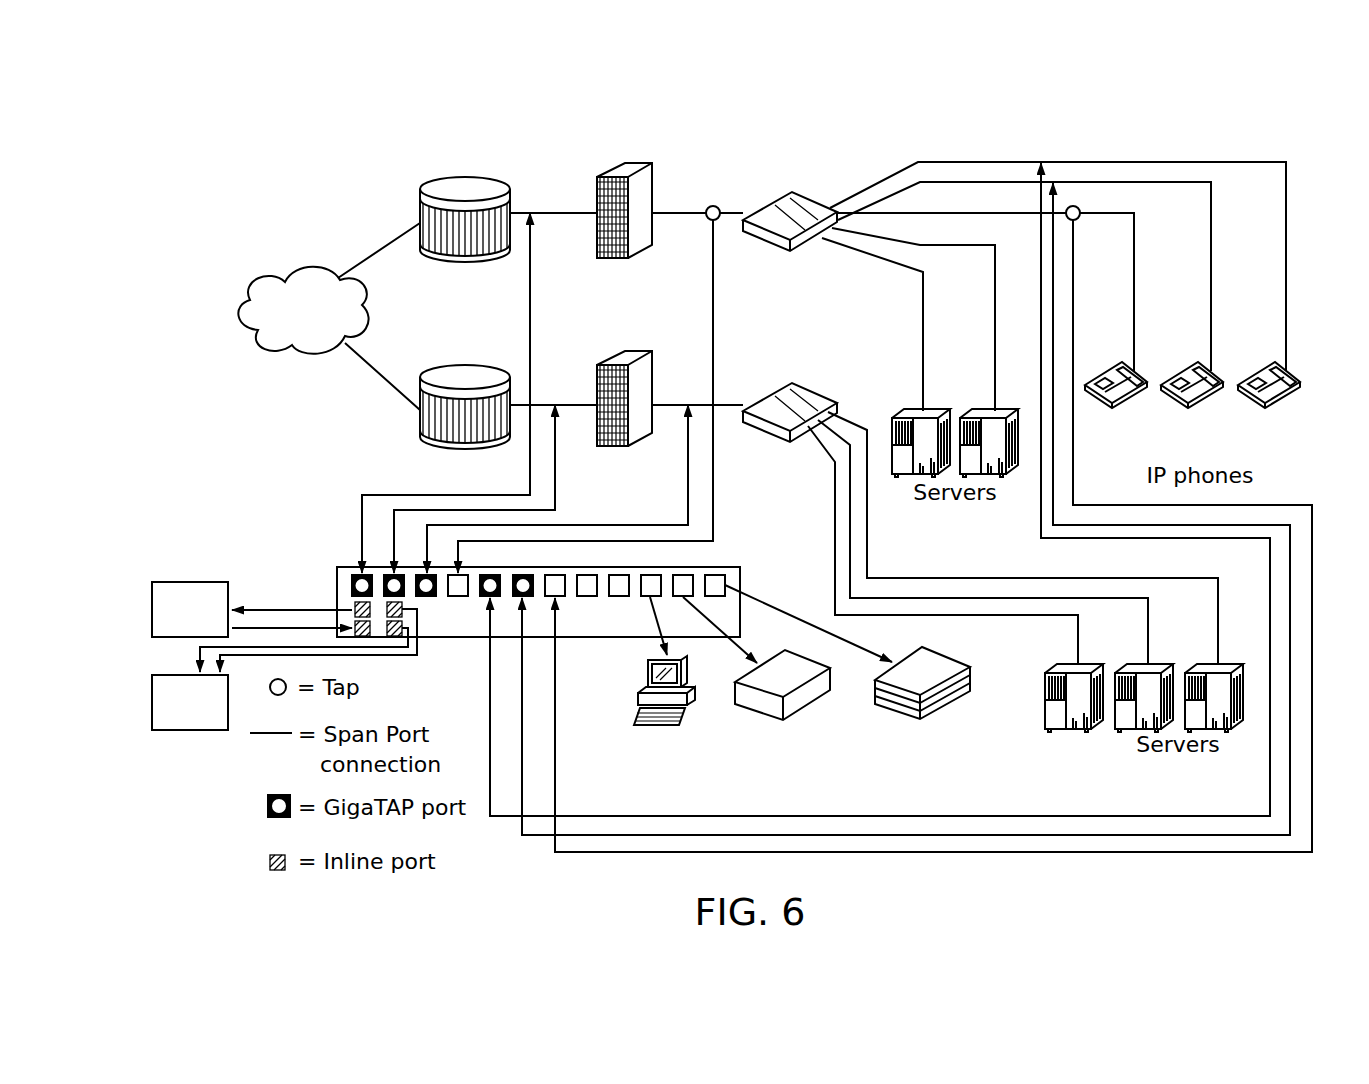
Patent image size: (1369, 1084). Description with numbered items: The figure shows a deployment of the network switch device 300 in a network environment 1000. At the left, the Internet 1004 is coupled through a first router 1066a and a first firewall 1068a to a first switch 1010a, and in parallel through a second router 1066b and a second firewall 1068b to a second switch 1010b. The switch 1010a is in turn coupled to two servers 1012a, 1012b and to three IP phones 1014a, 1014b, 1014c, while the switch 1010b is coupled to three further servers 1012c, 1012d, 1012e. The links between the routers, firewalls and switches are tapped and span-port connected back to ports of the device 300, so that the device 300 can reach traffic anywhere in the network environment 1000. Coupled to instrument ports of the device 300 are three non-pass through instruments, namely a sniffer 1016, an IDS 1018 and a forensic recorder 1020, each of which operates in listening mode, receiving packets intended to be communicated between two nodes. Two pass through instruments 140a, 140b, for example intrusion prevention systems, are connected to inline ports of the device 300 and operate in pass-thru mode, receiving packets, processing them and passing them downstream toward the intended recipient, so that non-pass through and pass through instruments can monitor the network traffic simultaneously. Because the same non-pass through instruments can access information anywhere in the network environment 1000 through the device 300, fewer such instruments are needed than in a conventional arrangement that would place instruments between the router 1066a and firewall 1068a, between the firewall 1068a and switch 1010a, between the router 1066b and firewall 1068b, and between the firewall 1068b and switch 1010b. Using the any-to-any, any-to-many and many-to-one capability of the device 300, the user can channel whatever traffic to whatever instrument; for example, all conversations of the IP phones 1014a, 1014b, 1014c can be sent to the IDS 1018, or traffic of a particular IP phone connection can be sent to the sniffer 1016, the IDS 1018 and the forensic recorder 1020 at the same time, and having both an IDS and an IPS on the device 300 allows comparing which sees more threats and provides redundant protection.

The network environment 1000 is at (1155, 90).
The Internet 1004 is at (303, 273).
The router 1066a is at (468, 178).
The router 1066b is at (468, 366).
The firewall 1068a is at (612, 168).
The firewall 1068b is at (612, 356).
The switch 1010a is at (783, 194).
The switch 1010b is at (783, 385).
The server 1012a is at (900, 475).
The server 1012b is at (1015, 472).
The server 1012c is at (1058, 729).
The server 1012d is at (1130, 729).
The server 1012e is at (1238, 728).
The IP phone 1014a is at (1110, 406).
The IP phone 1014b is at (1200, 405).
The IP phone 1014c is at (1290, 400).
The sniffer 1016 is at (648, 675).
The IDS 1018 is at (755, 715).
The forensic recorder 1020 is at (880, 703).
The network switch device 300 is at (337, 598).
The pass through instrument 140a is at (150, 610).
The pass through instrument 140b is at (150, 703).